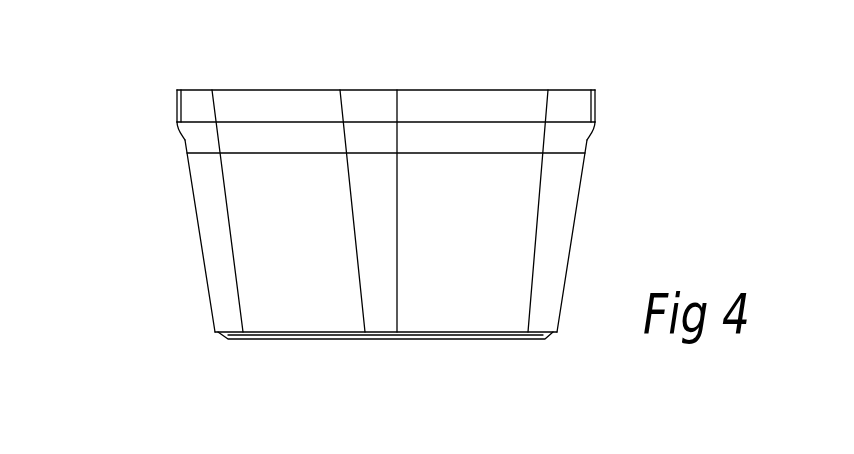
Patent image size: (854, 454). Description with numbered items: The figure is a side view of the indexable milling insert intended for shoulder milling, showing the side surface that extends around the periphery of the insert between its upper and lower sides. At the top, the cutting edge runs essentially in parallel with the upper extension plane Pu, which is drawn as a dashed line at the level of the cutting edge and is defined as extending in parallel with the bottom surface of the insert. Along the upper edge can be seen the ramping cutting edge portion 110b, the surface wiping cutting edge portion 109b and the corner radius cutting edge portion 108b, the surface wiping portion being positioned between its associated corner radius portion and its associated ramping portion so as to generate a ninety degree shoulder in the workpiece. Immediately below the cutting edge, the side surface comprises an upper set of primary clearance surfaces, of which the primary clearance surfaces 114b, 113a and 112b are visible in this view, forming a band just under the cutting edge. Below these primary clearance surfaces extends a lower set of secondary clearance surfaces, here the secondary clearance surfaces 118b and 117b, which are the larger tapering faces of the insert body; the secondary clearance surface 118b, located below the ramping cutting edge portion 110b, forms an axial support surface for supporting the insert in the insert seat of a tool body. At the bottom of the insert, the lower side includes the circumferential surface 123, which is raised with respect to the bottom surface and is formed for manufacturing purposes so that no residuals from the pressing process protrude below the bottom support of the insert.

The upper extension plane Pu is at (173, 91).
The ramping cutting edge portion 110b is at (267, 90).
The surface wiping cutting edge portion 109b is at (513, 90).
The corner radius cutting edge portion 108b is at (574, 90).
The primary clearance surface 112b is at (580, 108).
The primary clearance surface 114b is at (295, 106).
The primary clearance surface 113a is at (427, 106).
The secondary clearance surface 118b is at (267, 235).
The secondary clearance surface 117b is at (503, 233).
The circumferential surface 123 is at (555, 335).